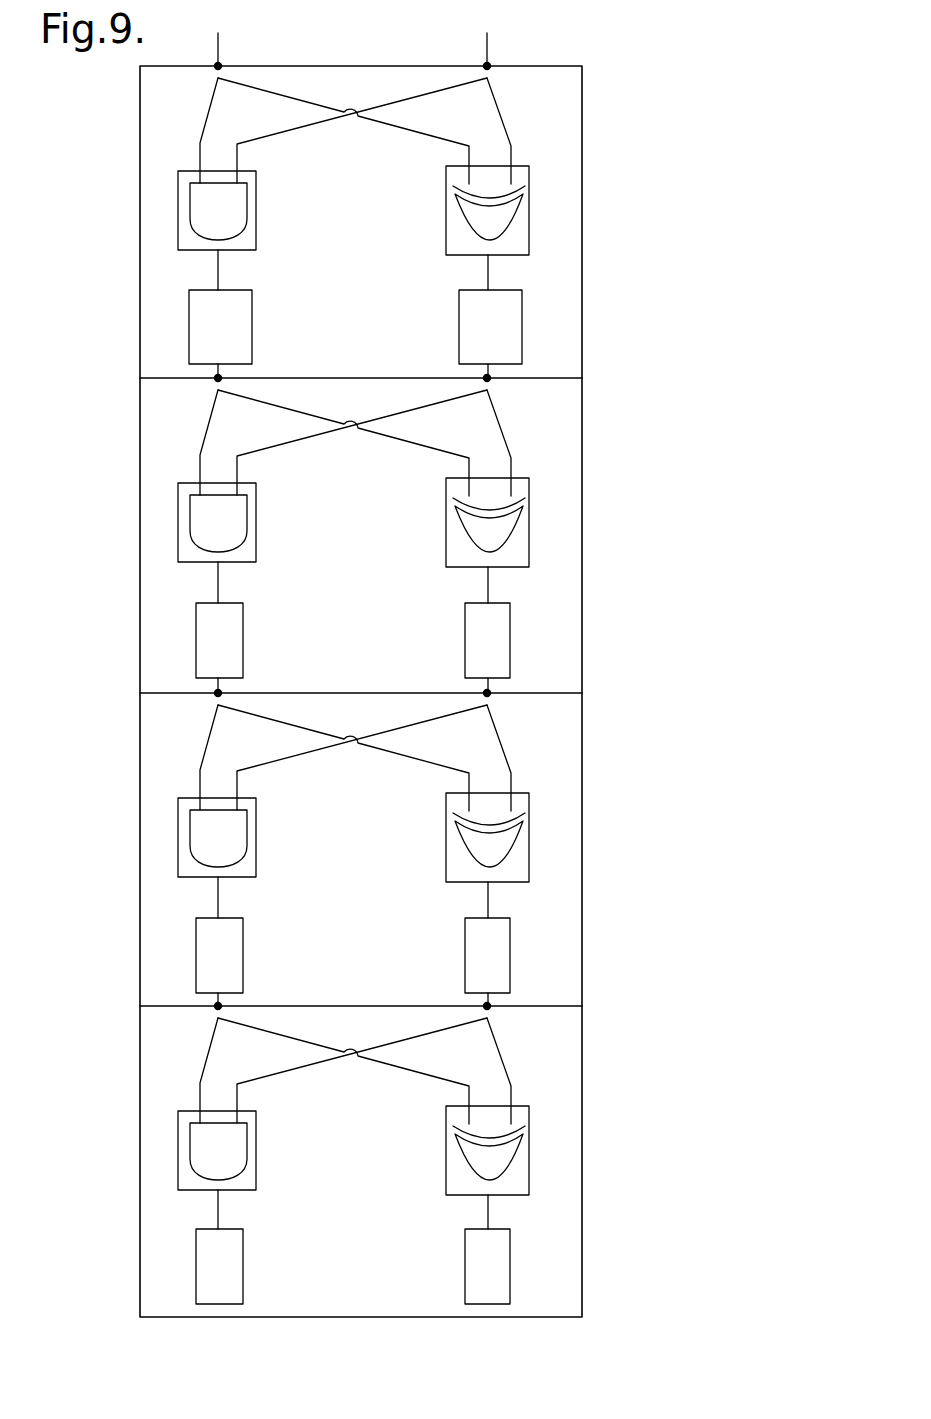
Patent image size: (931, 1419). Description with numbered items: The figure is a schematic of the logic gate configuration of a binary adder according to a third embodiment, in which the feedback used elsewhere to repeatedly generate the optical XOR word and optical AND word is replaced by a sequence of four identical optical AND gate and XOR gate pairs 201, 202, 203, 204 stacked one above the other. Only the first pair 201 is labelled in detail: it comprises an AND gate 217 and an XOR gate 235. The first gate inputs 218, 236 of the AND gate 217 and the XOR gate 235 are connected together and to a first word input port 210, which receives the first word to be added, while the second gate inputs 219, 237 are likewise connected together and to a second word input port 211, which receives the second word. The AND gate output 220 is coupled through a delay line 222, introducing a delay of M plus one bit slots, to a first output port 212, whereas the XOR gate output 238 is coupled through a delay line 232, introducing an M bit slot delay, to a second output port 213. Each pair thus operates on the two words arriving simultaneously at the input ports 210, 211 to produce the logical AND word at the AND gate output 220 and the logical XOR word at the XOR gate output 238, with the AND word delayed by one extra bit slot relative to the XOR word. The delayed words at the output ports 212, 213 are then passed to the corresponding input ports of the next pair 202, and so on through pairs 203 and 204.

The AND/XOR gate pair 201 is at (423, 230).
The AND/XOR gate pair 202 is at (602, 577).
The AND/XOR gate pair 203 is at (603, 852).
The AND/XOR gate pair 204 is at (595, 1183).
The first word input port 210 is at (221, 65).
The second word input port 211 is at (489, 65).
The first output port 212 is at (215, 378).
The second output port 213 is at (485, 378).
The AND gate 217 is at (257, 205).
The first gate input of AND gate 218 is at (199, 168).
The second gate input of AND gate 219 is at (238, 168).
The AND gate output 220 is at (220, 258).
The delay line 222 is at (252, 318).
The delay line 232 is at (522, 344).
The XOR gate 235 is at (530, 200).
The first gate input of XOR gate 236 is at (468, 166).
The second gate input of XOR gate 237 is at (512, 166).
The XOR gate output 238 is at (490, 258).